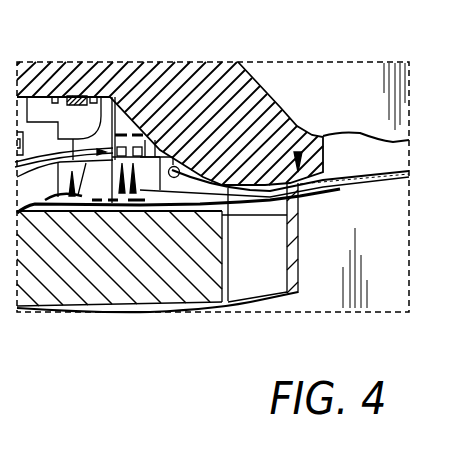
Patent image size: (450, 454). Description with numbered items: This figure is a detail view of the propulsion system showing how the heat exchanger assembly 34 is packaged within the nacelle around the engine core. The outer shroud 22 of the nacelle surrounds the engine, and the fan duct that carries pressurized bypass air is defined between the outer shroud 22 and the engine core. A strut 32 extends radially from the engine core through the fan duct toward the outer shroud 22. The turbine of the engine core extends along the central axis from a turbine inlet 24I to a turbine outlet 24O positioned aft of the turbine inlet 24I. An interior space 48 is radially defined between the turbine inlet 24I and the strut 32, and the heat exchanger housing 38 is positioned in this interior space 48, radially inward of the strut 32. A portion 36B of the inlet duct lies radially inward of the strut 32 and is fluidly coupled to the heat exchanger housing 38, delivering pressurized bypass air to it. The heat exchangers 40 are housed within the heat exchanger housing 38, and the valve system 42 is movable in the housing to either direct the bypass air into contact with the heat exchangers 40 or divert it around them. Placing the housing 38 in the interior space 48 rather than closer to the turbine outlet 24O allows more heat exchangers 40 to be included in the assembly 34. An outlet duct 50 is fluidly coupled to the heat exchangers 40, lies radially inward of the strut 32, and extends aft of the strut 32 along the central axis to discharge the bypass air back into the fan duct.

The outer shroud 22 is at (217, 330).
The turbine inlet 24I is at (118, 64).
The turbine outlet 24O is at (324, 186).
The strut 32 is at (208, 242).
The heat exchanger assembly 34 is at (190, 290).
The portion of the inlet duct 36B is at (30, 165).
The heat exchanger housing 38 is at (158, 290).
The heat exchangers 40 is at (152, 215).
The valve system 42 is at (120, 218).
The interior space 48 is at (97, 151).
The outlet duct 50 is at (296, 209).